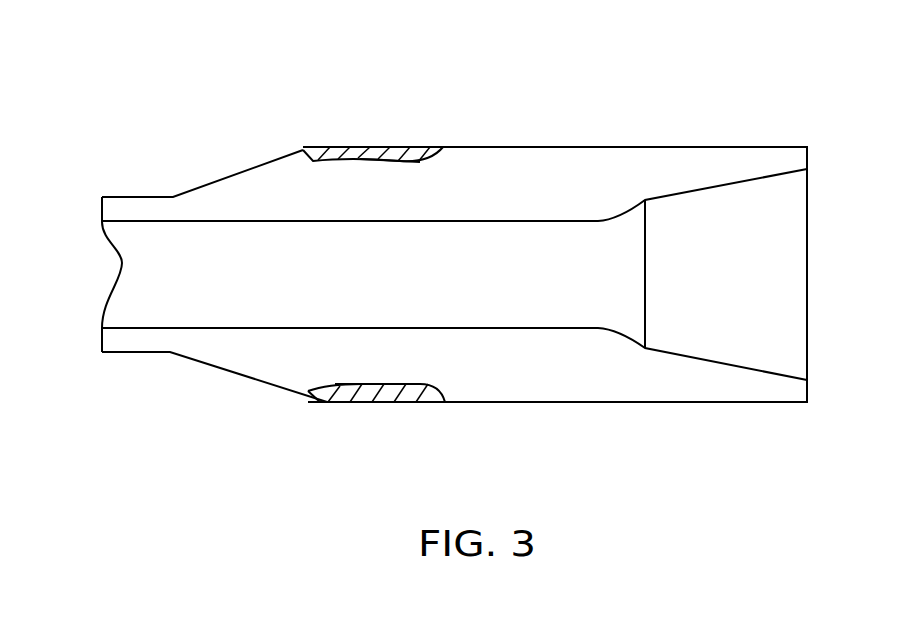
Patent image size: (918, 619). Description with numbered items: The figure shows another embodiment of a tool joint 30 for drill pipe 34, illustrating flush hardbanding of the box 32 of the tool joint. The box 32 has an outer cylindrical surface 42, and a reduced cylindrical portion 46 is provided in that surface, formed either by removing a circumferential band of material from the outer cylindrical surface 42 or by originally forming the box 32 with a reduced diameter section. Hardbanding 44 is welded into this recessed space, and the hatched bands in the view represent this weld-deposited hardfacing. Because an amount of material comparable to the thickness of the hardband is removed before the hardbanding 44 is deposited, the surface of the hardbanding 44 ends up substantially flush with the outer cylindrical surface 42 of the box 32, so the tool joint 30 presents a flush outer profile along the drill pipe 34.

The tool joint 30 is at (648, 147).
The box 32 is at (625, 378).
The drill pipe 34 is at (140, 352).
The outer cylindrical surface 42 is at (503, 147).
The hardbanding 44 is at (375, 147).
The reduced cylindrical portion 46 is at (395, 163).